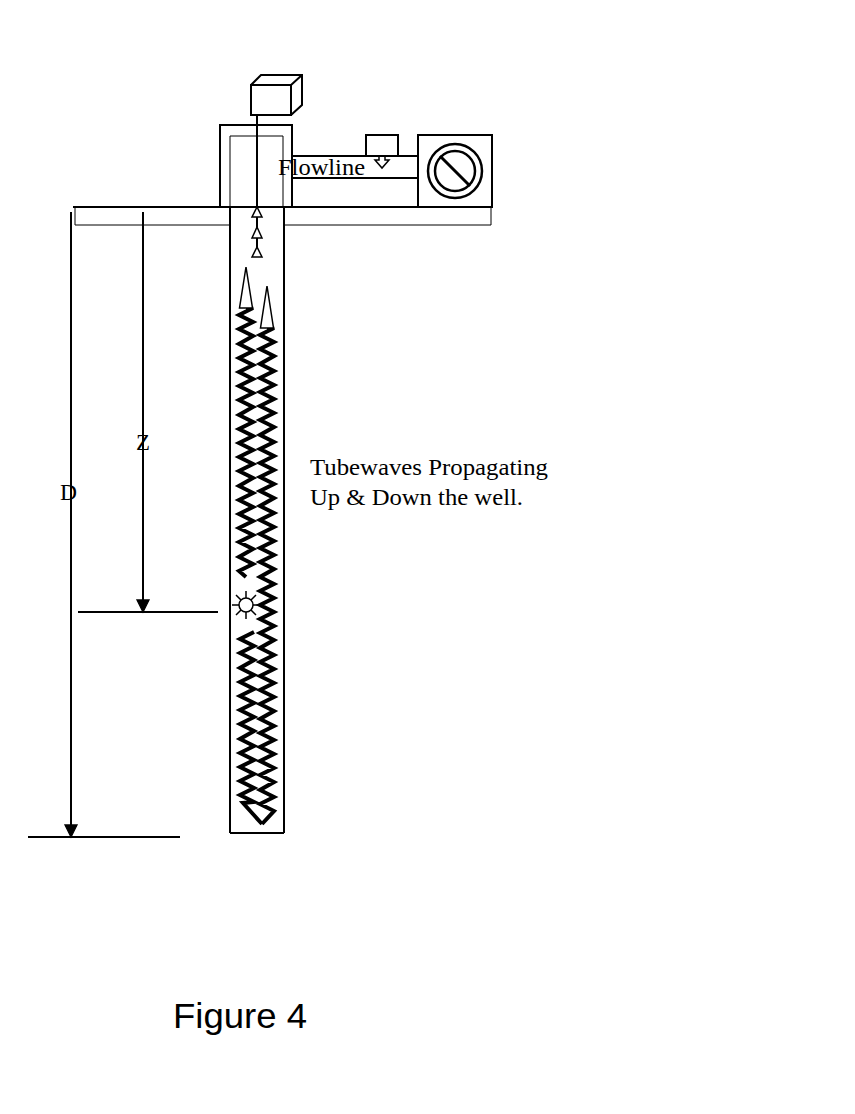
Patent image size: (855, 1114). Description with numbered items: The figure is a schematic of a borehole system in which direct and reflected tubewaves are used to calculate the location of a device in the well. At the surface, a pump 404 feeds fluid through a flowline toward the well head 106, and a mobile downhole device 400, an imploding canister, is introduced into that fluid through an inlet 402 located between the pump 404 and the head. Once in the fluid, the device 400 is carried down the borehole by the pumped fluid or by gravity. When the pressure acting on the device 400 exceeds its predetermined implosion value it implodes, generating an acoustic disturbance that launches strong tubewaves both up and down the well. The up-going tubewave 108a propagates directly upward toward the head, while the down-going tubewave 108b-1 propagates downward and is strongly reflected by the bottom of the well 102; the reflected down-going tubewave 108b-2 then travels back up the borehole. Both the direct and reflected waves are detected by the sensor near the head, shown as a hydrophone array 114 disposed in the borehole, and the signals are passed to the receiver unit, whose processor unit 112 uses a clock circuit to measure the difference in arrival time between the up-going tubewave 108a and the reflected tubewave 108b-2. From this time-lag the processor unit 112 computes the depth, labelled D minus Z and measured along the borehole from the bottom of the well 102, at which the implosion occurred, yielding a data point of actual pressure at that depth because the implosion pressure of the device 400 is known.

The bottom of the borehole 102 is at (258, 877).
The well head 106 is at (197, 166).
The up-going tubewave 108a is at (242, 442).
The down-going tubewave 108b-1 is at (243, 660).
The reflected down-going tubewave 108b-2 is at (272, 677).
The processor unit 112 is at (227, 109).
The hydrophone digitizer 114 is at (335, 248).
The mobile downhole device 400 is at (343, 577).
The inlet 402 is at (385, 121).
The pump 404 is at (491, 181).